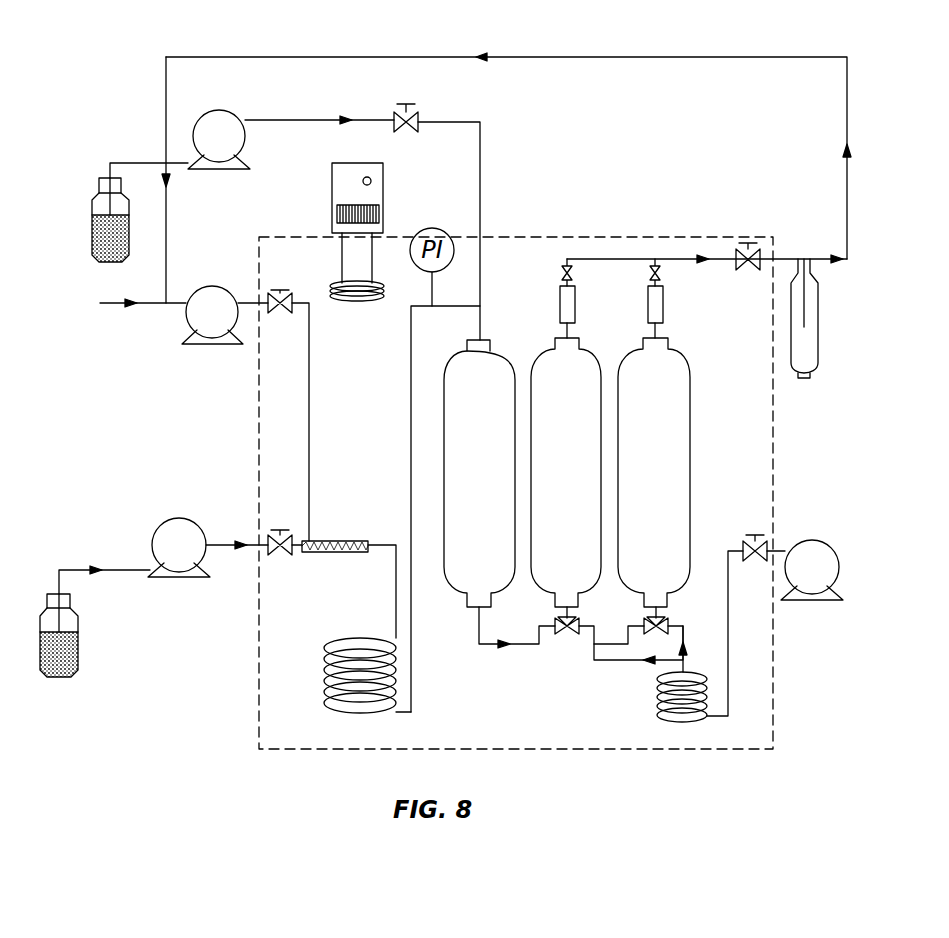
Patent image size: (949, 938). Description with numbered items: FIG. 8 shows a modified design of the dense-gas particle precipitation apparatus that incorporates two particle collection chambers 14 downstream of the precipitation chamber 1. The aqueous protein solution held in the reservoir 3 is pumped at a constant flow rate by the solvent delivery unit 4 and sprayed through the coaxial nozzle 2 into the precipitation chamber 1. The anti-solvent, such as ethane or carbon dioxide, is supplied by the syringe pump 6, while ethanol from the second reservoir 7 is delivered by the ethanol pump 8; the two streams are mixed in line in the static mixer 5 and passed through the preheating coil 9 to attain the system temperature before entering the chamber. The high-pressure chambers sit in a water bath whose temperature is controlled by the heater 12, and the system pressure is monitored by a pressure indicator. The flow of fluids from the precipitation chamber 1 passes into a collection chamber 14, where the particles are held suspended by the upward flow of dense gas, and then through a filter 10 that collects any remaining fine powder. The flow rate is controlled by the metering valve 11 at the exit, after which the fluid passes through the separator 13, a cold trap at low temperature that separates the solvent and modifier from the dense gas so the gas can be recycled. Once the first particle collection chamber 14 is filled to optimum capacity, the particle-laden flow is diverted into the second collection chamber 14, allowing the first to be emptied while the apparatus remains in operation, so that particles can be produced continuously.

The precipitation chamber 1 is at (444, 470).
The coaxial nozzle 2 is at (490, 346).
The reservoir 3 is at (92, 236).
The solvent delivery unit 4 is at (219, 110).
The static mixer 5 is at (340, 541).
The syringe pump 6 is at (212, 345).
The modifier reservoir 7 is at (58, 678).
The pump 8 is at (178, 578).
The heating coil 9 is at (322, 703).
The filter 10 is at (575, 305).
The metering valve 11 is at (748, 243).
The heater 12 is at (383, 191).
The separator 13 is at (805, 378).
The particle collection chamber 14 is at (692, 472).